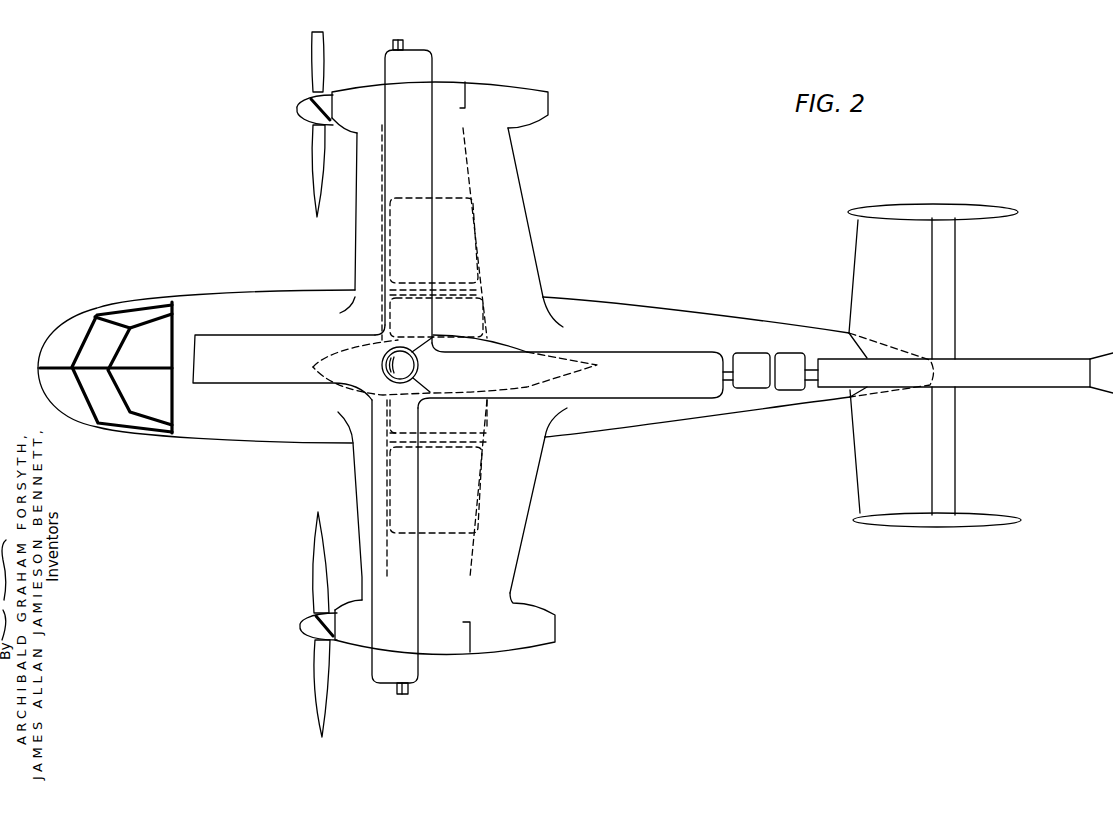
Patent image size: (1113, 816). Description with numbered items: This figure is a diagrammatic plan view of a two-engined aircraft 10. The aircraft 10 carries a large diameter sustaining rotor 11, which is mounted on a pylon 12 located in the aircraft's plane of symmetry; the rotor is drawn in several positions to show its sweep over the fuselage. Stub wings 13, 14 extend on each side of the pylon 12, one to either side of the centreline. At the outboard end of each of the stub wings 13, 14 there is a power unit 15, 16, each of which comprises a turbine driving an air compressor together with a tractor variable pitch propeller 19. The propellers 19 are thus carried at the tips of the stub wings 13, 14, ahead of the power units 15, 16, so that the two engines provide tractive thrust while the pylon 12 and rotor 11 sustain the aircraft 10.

The aircraft 10 is at (232, 425).
The sustaining rotor 11 is at (252, 362).
The pylon 12 is at (473, 347).
The stub wing 13 is at (507, 196).
The stub wing 14 is at (515, 492).
The power unit 15 is at (448, 88).
The power unit 16 is at (452, 637).
The tractor variable pitch propeller 19 is at (312, 48).